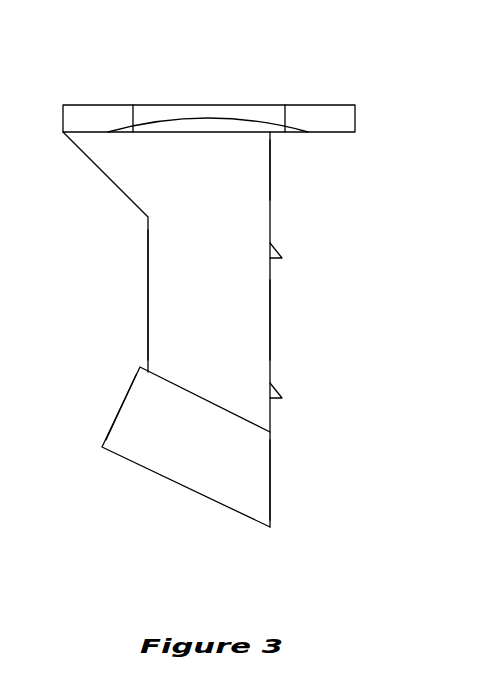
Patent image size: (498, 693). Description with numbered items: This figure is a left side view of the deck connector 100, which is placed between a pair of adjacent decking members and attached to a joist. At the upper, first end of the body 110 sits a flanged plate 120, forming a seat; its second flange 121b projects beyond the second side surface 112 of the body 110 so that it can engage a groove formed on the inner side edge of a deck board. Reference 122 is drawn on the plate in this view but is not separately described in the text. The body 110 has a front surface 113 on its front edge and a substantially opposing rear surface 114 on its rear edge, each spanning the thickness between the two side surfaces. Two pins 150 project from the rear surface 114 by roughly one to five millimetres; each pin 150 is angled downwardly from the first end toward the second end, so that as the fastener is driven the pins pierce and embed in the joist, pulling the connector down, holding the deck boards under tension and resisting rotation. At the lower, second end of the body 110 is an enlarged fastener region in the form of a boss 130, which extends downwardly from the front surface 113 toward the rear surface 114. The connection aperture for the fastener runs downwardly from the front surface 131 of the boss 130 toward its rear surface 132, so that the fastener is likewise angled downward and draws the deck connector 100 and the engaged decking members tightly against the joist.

The deck connector 100 is at (145, 72).
The flanged plate 120 is at (283, 82).
The second flange 121b is at (203, 113).
The plate side portion 122 is at (320, 105).
The body 110 is at (293, 215).
The second side surface 112 is at (258, 186).
The front surface 113 is at (148, 295).
The rear surface 114 is at (270, 320).
The pin 150 is at (283, 252).
The boss 130 is at (165, 488).
The front surface of the boss 131 is at (121, 404).
The rear surface of the boss 132 is at (270, 507).